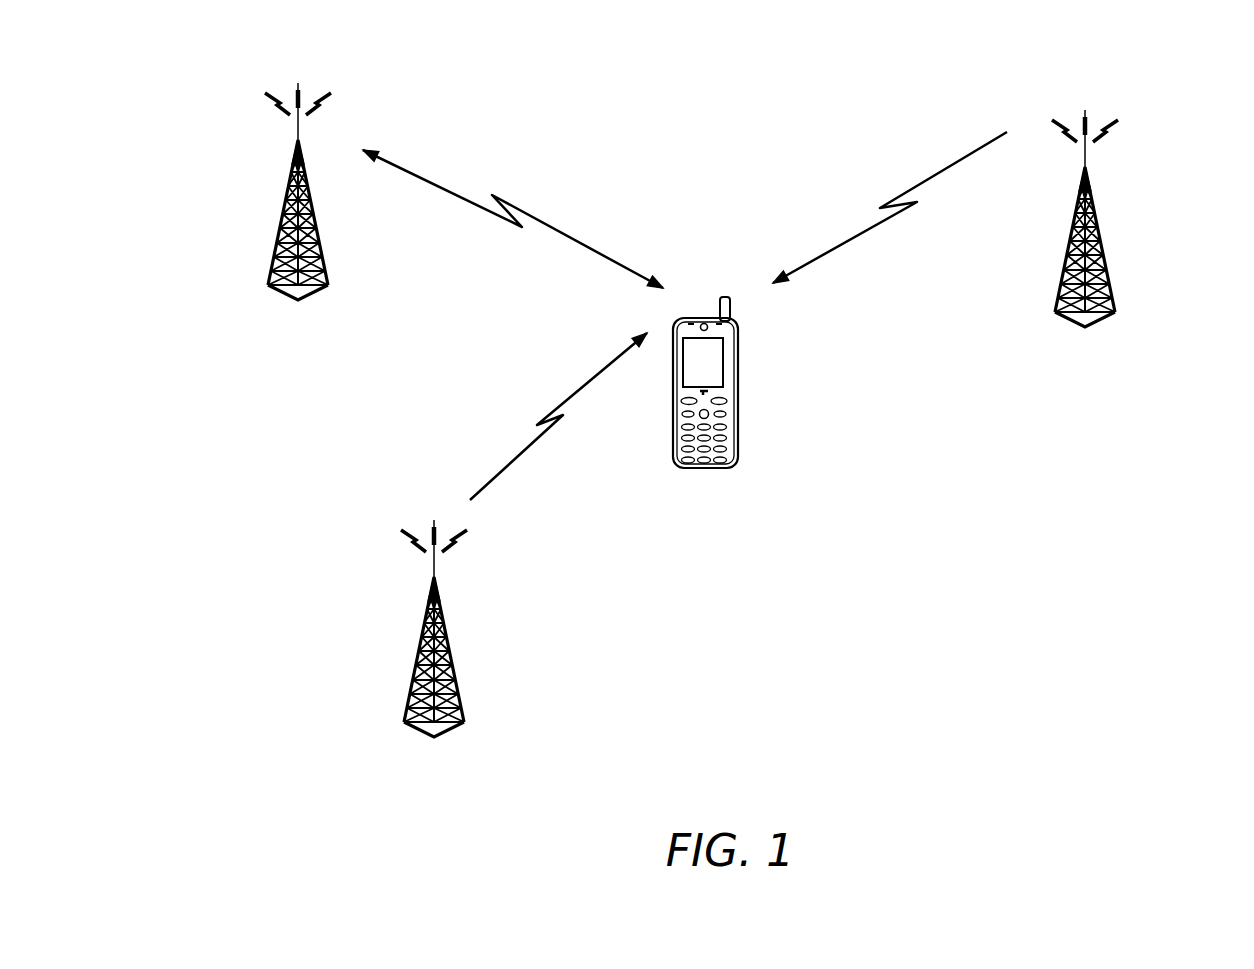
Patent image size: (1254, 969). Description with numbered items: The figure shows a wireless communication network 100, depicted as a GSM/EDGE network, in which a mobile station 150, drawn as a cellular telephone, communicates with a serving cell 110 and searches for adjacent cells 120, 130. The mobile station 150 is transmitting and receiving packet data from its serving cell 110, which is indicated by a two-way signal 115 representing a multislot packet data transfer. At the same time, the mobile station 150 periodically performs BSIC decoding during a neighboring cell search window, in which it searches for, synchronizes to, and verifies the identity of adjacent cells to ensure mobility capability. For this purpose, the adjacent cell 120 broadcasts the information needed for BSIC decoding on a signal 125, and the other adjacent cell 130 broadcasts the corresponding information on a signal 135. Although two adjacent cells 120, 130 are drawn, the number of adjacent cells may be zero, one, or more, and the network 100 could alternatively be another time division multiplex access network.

The wireless communication network 100 is at (1214, 89).
The serving cell 110 is at (281, 246).
The two-way signal 115 is at (438, 187).
The adjacent cell 120 is at (412, 682).
The signal 125 is at (515, 459).
The adjacent cell 130 is at (1062, 274).
The signal 135 is at (845, 233).
The mobile station 150 is at (736, 394).